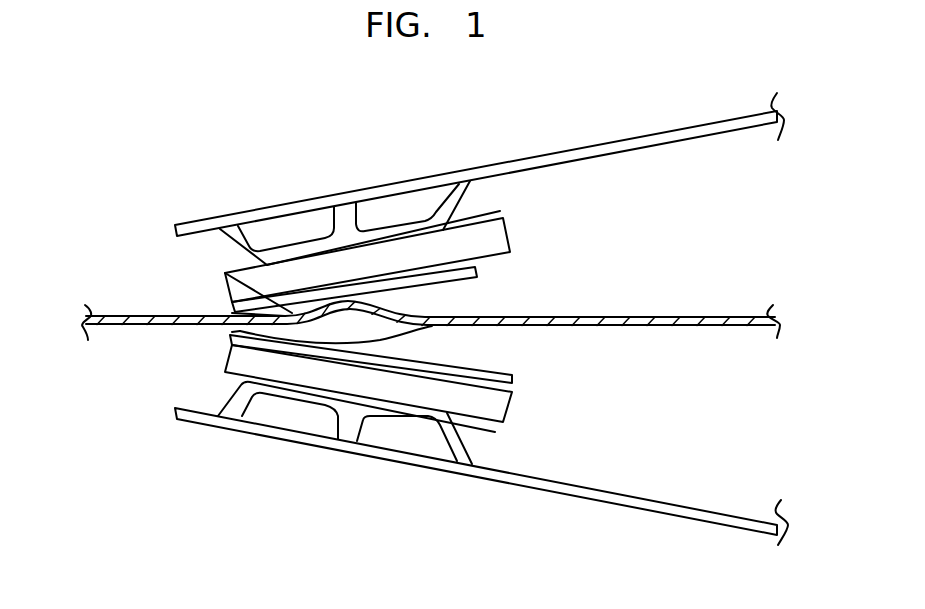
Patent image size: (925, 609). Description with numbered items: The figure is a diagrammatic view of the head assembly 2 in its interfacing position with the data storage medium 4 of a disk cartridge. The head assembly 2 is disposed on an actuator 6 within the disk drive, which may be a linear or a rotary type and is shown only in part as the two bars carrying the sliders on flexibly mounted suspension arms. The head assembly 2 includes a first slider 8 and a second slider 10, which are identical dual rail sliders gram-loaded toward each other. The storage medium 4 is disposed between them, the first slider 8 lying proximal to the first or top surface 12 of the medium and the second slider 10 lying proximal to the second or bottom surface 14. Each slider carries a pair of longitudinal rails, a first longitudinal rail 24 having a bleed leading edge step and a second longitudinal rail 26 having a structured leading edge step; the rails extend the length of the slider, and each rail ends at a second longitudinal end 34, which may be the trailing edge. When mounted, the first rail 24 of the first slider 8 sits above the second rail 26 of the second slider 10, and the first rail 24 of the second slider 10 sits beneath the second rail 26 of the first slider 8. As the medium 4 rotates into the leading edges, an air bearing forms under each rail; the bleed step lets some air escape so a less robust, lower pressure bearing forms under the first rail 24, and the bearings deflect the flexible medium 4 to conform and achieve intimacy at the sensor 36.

The head assembly 2 is at (158, 150).
The data storage medium 4 is at (688, 317).
The actuator 6 is at (703, 128).
The first slider 8 is at (488, 239).
The second slider 10 is at (453, 371).
The first surface 12 is at (626, 313).
The second surface 14 is at (664, 326).
The first longitudinal rail 24 is at (440, 278).
The second longitudinal rail 26 is at (460, 406).
The second longitudinal end 34 is at (232, 313).
The sensor 36 is at (225, 273).